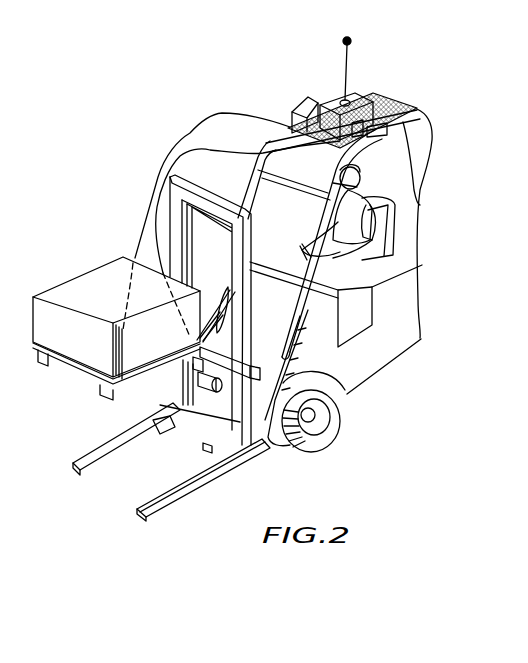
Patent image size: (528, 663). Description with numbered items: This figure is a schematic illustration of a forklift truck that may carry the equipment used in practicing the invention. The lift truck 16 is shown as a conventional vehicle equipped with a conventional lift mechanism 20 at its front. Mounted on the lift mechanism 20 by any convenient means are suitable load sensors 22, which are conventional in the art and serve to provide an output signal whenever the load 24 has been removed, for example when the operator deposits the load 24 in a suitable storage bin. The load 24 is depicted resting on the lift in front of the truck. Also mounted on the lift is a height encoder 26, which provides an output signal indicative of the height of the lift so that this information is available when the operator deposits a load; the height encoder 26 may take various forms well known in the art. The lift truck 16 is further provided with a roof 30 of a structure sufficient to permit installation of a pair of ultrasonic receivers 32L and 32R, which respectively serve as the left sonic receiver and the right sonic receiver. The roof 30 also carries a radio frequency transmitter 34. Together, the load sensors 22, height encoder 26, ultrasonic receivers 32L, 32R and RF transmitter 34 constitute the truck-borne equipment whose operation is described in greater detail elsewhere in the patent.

The lift truck 16 is at (393, 322).
The lift mechanism 20 is at (190, 475).
The load sensors 22 is at (120, 398).
The load 24 is at (82, 345).
The height encoder 26 is at (222, 385).
The roof 30 is at (418, 178).
The right sonic receiver 32R is at (308, 105).
The left sonic receiver 32L is at (405, 106).
The radio frequency transmitter 34 is at (363, 92).